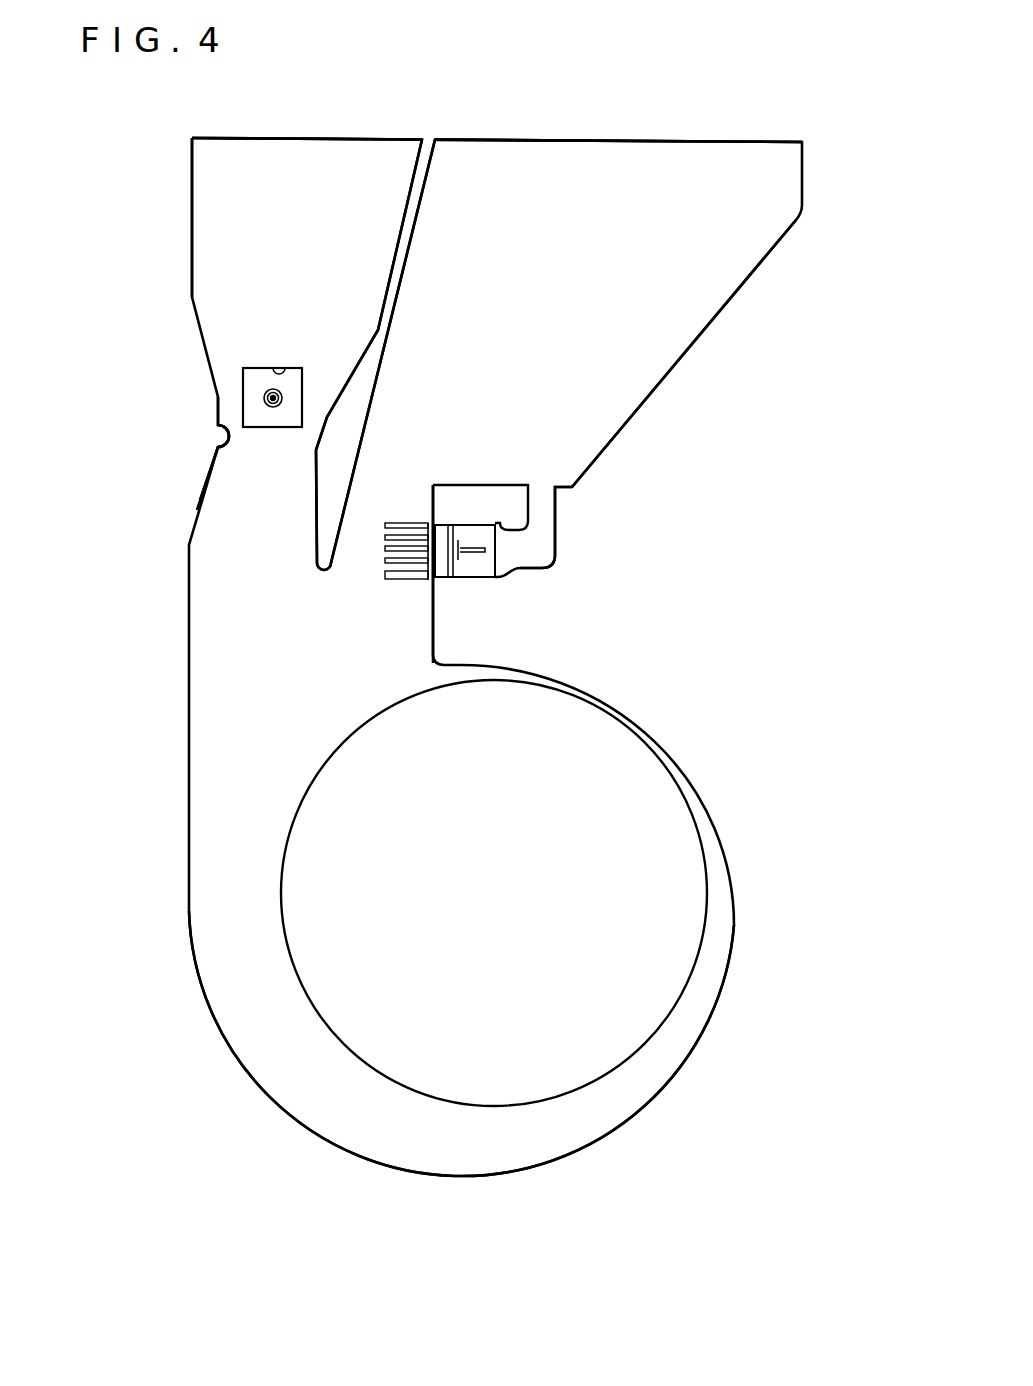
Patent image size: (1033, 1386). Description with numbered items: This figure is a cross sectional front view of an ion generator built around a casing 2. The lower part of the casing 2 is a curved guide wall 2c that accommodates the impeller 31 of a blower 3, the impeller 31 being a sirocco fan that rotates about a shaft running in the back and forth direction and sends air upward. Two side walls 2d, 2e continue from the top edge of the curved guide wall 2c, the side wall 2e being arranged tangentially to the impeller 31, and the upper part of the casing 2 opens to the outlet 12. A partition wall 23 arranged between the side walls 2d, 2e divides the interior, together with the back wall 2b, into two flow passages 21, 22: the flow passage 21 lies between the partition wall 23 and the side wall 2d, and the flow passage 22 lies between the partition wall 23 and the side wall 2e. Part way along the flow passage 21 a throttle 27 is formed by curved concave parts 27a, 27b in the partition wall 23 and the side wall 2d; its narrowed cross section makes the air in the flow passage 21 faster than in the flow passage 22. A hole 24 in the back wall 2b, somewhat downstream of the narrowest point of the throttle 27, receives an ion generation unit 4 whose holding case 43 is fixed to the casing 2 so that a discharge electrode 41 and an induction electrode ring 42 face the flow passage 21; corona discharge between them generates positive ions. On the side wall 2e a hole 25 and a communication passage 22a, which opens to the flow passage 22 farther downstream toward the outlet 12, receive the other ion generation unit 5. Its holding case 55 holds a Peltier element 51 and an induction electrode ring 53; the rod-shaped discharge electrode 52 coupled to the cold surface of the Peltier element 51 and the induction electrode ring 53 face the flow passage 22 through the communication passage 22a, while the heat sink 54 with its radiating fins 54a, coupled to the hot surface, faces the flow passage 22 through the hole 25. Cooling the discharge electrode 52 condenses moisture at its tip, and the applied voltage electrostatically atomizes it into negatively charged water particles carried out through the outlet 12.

The casing 2 is at (180, 702).
The outlet 12 is at (285, 138).
The back wall 2b is at (202, 168).
The side wall 2d is at (191, 209).
The flow passage 21 is at (333, 235).
The flow passage 22 is at (613, 237).
The partition wall 23 is at (407, 253).
The side wall 2e is at (701, 330).
The hole 24 is at (284, 367).
The ion generation unit 4 is at (156, 322).
The discharge electrode 41 is at (265, 398).
The induction electrode ring 42 is at (264, 402).
The holding case 43 is at (265, 390).
The throttle 27 is at (164, 453).
The curved concave part 27a is at (217, 443).
The curved concave part 27b is at (315, 456).
The hole 25 is at (431, 527).
The ion generation unit 5 is at (532, 519).
The holding case 55 is at (465, 523).
The Peltier element 51 is at (450, 570).
The discharge electrode 52 is at (486, 550).
The induction electrode ring 53 is at (496, 559).
The heat sink 54 is at (361, 595).
The radiating fins 54a is at (424, 579).
The communication passage 22a is at (545, 511).
The impeller 31 is at (705, 893).
The blower 3 is at (585, 893).
The curved guide wall 2c is at (687, 1078).